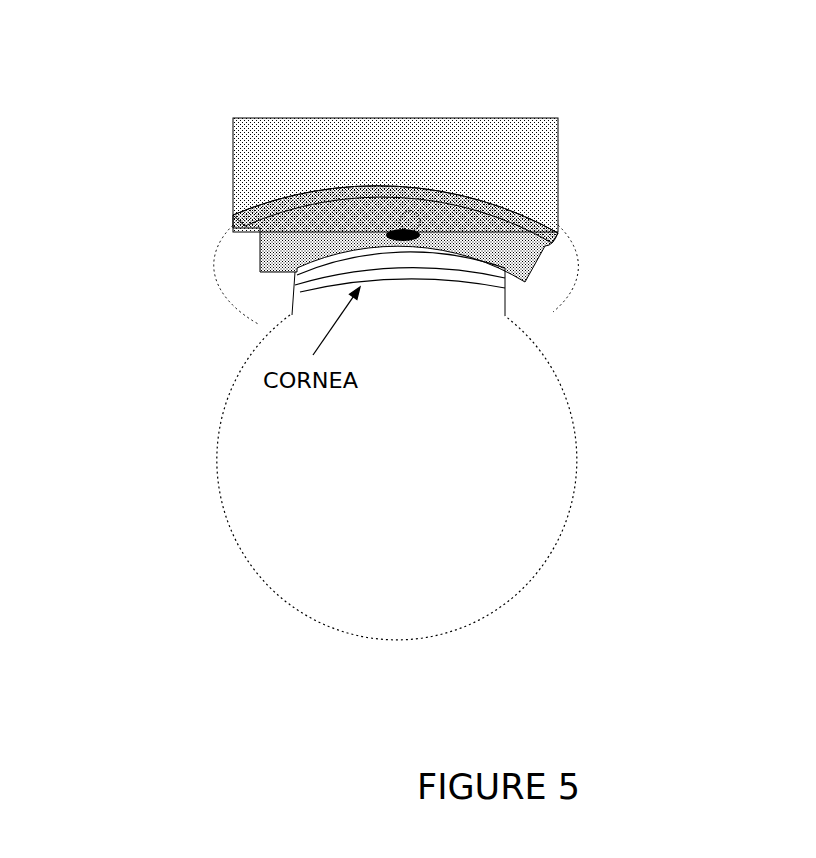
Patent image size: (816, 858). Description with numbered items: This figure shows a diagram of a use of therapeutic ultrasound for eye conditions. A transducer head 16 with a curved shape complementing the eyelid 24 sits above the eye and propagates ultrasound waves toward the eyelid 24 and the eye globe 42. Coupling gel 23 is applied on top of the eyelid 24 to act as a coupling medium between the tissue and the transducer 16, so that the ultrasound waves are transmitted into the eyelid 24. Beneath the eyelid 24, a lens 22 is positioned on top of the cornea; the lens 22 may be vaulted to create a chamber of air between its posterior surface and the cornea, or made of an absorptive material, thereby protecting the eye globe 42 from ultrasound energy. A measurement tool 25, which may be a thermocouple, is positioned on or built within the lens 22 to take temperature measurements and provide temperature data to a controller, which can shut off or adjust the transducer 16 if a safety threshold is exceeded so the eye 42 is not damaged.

The transducer head 16 is at (509, 125).
The lens 22 is at (291, 276).
The coupling gel 23 is at (294, 200).
The eyelid 24 is at (258, 244).
The measurement tool 25 is at (399, 217).
The eye globe 42 is at (396, 432).